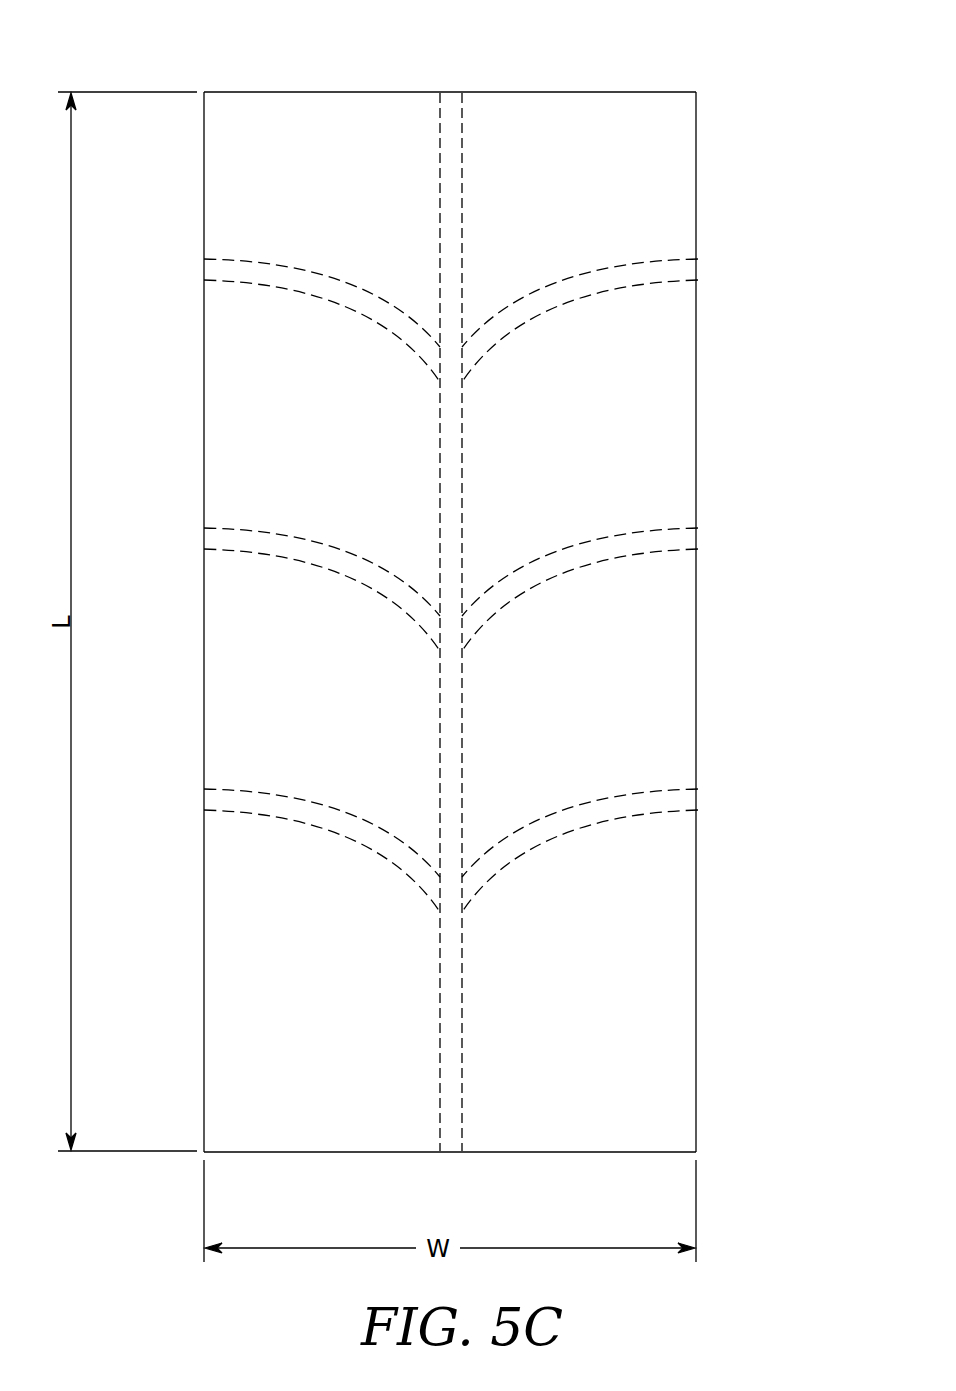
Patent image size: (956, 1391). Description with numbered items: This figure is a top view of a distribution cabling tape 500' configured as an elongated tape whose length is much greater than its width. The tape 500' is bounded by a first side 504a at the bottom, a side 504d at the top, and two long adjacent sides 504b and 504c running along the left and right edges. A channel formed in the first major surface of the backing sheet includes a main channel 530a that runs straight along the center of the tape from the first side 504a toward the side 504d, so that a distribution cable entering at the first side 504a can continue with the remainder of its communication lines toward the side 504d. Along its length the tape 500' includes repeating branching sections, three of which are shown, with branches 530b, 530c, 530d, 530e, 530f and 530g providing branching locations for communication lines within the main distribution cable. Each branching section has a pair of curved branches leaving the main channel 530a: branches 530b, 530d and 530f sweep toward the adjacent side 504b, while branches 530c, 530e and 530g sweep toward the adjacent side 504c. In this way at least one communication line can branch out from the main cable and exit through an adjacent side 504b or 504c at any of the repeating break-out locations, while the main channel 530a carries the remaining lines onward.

The distribution cabling tape 500' is at (764, 25).
The first side 504a is at (508, 1153).
The adjacent side 504b is at (203, 973).
The adjacent side 504c is at (697, 913).
The side 504d is at (574, 92).
The main channel 530a is at (452, 1037).
The branch 530b is at (314, 810).
The branch 530c is at (580, 812).
The branch 530d is at (314, 550).
The branch 530e is at (580, 552).
The branch 530f is at (314, 283).
The branch 530g is at (580, 285).